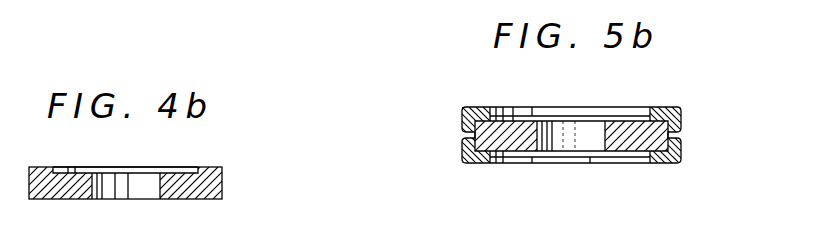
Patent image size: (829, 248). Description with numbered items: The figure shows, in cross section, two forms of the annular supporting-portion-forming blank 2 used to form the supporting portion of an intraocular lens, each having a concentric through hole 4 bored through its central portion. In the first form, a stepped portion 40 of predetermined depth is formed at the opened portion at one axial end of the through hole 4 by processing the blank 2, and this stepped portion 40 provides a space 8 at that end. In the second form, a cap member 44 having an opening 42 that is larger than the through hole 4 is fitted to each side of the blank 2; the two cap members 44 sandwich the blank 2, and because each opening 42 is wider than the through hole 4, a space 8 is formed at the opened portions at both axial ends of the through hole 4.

In FIG. 4b, the supporting-portion-forming blank 2 is at (235, 168).
In FIG. 5b, the supporting-portion-forming blank 2 is at (511, 165).
In FIG. 4b, the through hole 4 is at (105, 198).
In FIG. 5b, the through hole 4 is at (544, 162).
In FIG. 4b, the space 8 is at (118, 167).
In FIG. 5b, the space 8 is at (558, 106).
In FIG. 4b, the stepped portion 40 is at (177, 166).
In FIG. 5b, the opening 42 is at (642, 106).
In FIG. 5b, the cap member 44 is at (457, 121).